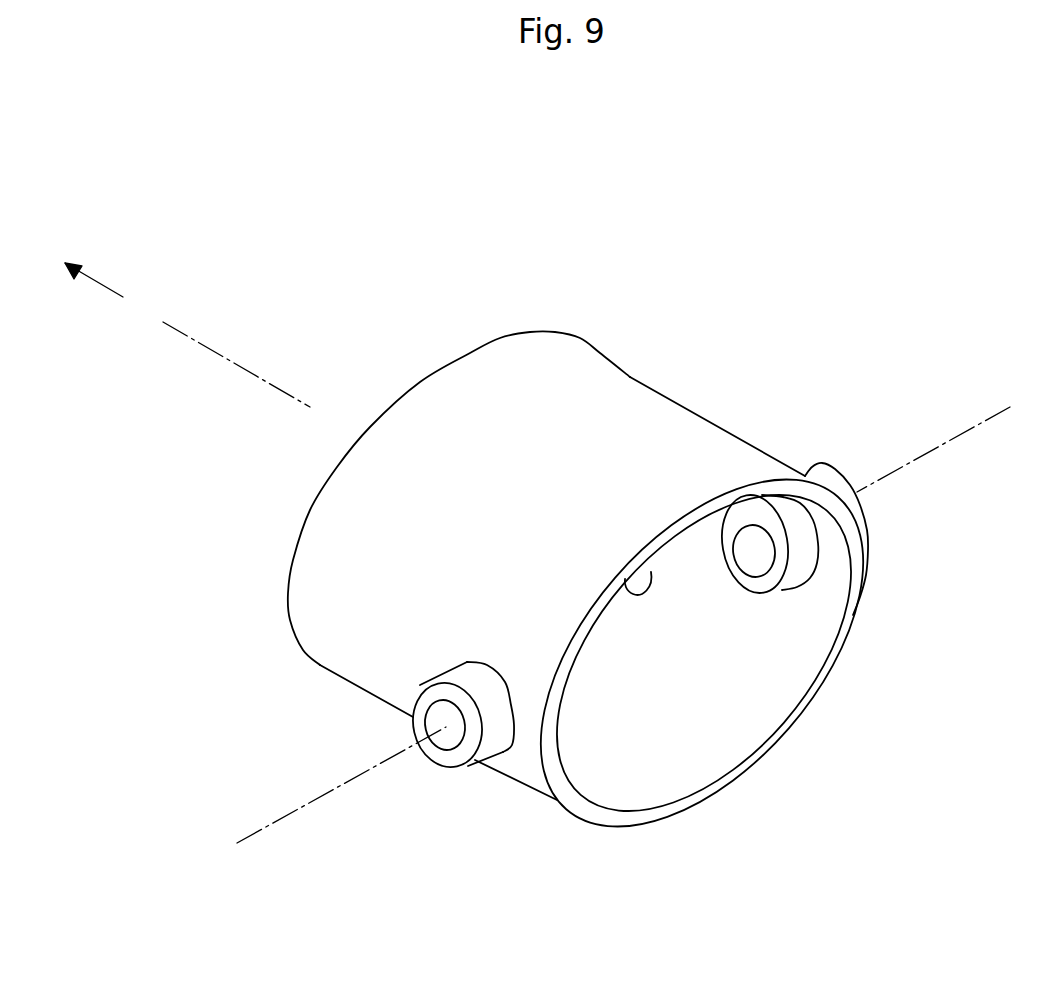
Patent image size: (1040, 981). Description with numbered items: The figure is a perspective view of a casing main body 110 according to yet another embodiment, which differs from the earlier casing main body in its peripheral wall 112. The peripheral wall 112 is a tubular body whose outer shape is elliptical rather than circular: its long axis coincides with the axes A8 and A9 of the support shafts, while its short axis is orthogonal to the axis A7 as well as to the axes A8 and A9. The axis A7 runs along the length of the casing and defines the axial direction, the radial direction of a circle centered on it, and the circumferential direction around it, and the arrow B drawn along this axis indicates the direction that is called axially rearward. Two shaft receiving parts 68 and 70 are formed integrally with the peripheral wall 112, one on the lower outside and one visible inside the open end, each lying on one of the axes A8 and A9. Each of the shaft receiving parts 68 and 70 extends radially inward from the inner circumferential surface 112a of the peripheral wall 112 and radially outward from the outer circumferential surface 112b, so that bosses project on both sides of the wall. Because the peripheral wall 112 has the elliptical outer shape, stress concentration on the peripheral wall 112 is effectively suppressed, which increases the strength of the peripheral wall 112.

The casing main body 110 is at (812, 185).
The peripheral wall 112 is at (583, 410).
The inner circumferential surface 112a is at (650, 575).
The outer circumferential surface 112b is at (555, 538).
The shaft receiving part 68 is at (488, 730).
The shaft receiving part 70 is at (800, 548).
The axis A7 is at (212, 350).
The axis A8 is at (263, 832).
The axis A9 is at (985, 420).
The arrow B is at (179, 325).